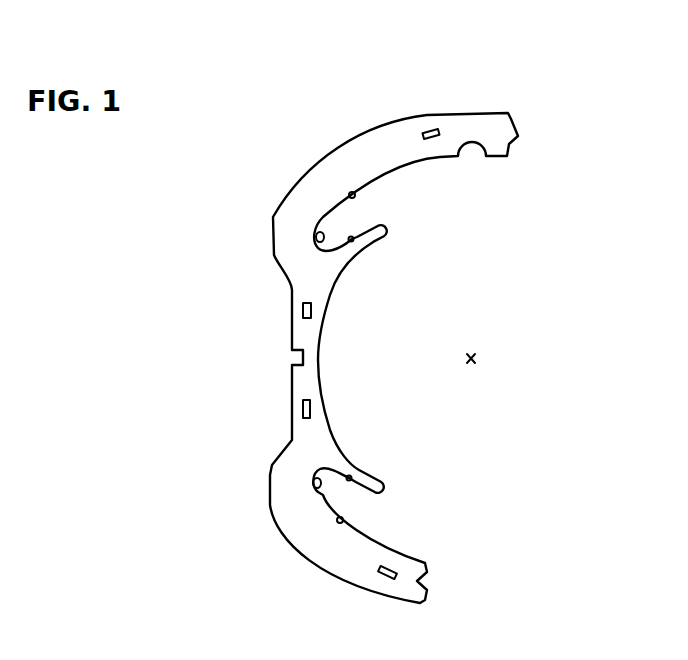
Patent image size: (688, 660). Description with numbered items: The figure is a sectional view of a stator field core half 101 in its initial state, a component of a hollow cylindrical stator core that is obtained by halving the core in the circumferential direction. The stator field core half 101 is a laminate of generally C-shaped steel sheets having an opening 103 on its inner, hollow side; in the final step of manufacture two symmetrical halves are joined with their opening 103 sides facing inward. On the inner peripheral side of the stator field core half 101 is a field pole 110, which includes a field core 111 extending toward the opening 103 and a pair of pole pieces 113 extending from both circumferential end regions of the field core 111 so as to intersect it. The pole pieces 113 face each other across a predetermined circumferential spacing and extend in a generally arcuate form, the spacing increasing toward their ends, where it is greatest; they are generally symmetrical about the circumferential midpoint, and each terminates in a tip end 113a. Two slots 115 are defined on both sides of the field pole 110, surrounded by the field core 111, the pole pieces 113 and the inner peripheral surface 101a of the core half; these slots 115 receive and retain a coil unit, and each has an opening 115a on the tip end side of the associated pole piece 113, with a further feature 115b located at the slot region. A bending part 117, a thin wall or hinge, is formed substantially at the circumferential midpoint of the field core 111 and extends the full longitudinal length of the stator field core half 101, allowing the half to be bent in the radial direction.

The stator field core half 101 is at (449, 104).
The inner peripheral surface 101a is at (352, 191).
The opening 103 is at (482, 355).
The field pole 110 is at (284, 344).
The field core 111 is at (316, 382).
The pole pieces 113 is at (389, 242).
The hook tip 113a is at (367, 242).
The slots 115 is at (337, 219).
The opening 115a is at (378, 203).
The hole 115b is at (316, 237).
The bending part 117 is at (304, 362).